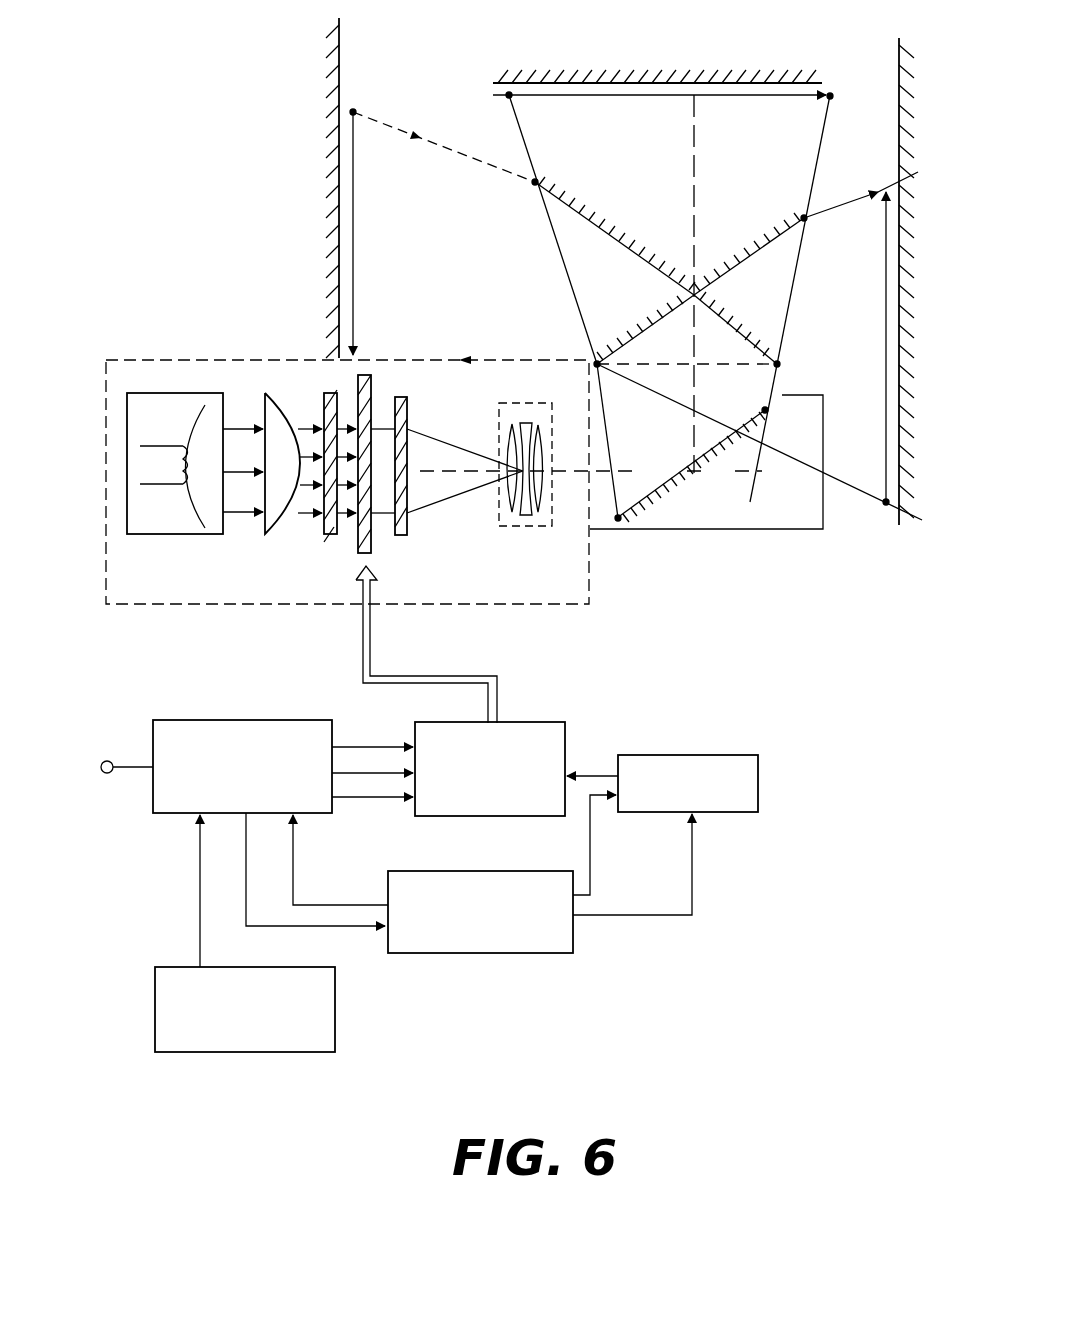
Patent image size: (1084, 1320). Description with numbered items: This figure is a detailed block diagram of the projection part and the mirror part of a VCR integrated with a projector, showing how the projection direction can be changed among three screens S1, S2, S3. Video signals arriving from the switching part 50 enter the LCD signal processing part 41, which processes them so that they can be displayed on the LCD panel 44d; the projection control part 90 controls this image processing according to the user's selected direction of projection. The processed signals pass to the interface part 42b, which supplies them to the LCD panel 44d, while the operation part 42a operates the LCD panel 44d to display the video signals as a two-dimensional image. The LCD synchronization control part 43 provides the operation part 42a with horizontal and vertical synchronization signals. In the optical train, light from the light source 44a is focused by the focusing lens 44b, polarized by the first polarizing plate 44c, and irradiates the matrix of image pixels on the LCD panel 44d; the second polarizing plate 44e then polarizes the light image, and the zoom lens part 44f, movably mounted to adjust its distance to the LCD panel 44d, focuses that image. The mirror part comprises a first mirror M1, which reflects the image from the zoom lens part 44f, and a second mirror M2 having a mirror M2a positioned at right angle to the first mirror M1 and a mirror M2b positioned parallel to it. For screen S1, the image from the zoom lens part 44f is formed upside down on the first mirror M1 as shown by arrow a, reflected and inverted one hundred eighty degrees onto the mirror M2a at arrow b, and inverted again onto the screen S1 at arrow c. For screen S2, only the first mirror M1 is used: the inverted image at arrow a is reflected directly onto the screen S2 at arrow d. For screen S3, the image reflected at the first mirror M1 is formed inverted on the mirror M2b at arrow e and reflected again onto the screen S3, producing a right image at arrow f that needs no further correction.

The LCD signal processing part 41 is at (181, 734).
The operation part 42a is at (686, 764).
The interface part 42b is at (543, 736).
The LCD synchronization control part 43 is at (544, 945).
The light source 44a is at (166, 532).
The focusing lens 44b is at (277, 520).
The first polarizing plate 44c is at (330, 536).
The LCD panel 44d is at (368, 556).
The second polarizing plate 44e is at (398, 537).
The zoom lens part 44f is at (527, 528).
The switching part 50 is at (125, 749).
The projection control part 90 is at (288, 1040).
The screen S1 is at (315, 188).
The screen S2 is at (659, 66).
The screen S3 is at (883, 335).
The first mirror M1 is at (727, 440).
The second mirror M2 is at (703, 305).
The mirror M2a is at (618, 244).
The mirror M2b is at (740, 262).
The arrow a is at (622, 518).
The arrow b is at (540, 180).
The arrow c is at (357, 355).
The arrow d is at (826, 102).
The arrow e is at (598, 358).
The arrow f is at (876, 198).